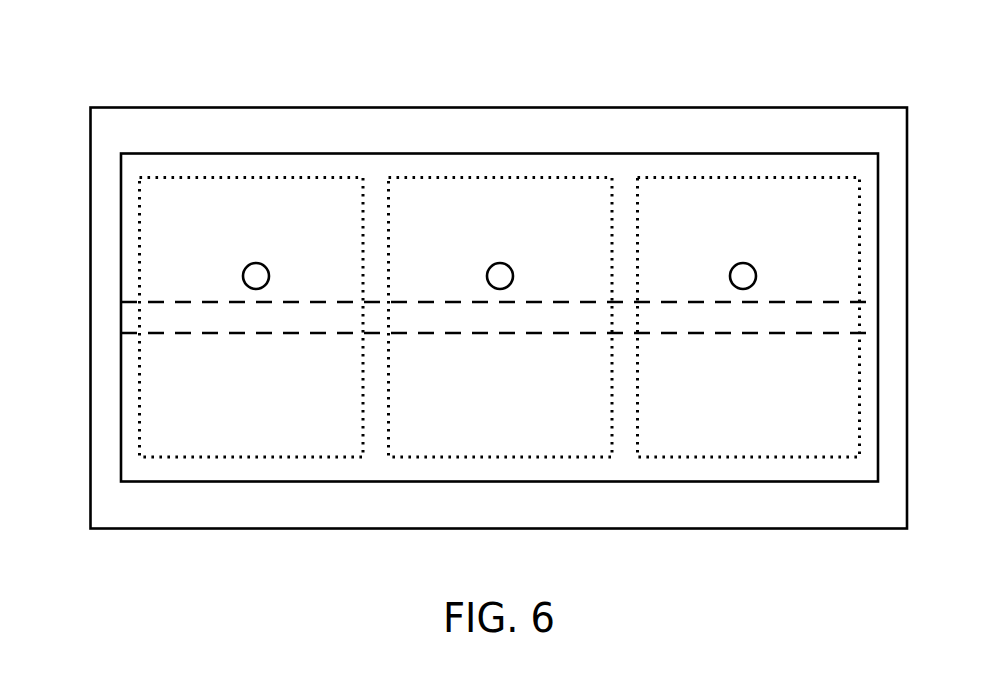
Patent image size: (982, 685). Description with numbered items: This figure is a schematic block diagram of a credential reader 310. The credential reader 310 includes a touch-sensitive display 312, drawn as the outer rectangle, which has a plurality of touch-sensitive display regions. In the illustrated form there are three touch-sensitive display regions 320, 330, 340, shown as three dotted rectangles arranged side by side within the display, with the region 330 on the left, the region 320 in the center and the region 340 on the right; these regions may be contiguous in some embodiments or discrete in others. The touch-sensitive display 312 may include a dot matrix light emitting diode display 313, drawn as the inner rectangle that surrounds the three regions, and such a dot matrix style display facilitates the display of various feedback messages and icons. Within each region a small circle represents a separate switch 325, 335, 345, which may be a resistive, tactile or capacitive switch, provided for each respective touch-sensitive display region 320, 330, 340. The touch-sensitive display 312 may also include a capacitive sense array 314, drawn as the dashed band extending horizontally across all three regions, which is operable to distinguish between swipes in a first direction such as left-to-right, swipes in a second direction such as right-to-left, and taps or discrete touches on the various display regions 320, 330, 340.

The credential reader 310 is at (145, 70).
The touch-sensitive display 312 is at (90, 126).
The dot matrix light emitting diode (LED) display 313 is at (121, 177).
The capacitive sense array 314 is at (127, 317).
The touch-sensitive display region 320 is at (424, 177).
The switch 325 is at (507, 265).
The touch-sensitive display region 330 is at (175, 177).
The switch 335 is at (263, 265).
The touch-sensitive display region 340 is at (673, 177).
The switch 345 is at (750, 265).